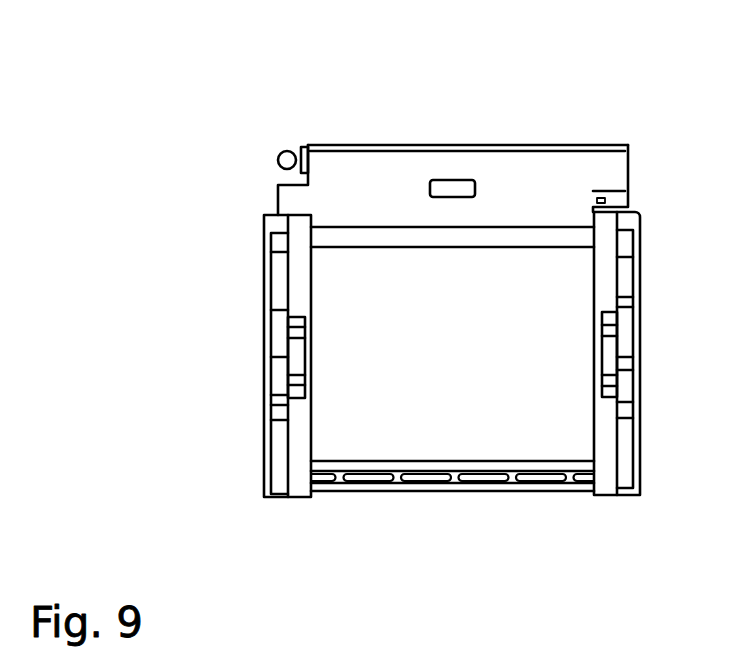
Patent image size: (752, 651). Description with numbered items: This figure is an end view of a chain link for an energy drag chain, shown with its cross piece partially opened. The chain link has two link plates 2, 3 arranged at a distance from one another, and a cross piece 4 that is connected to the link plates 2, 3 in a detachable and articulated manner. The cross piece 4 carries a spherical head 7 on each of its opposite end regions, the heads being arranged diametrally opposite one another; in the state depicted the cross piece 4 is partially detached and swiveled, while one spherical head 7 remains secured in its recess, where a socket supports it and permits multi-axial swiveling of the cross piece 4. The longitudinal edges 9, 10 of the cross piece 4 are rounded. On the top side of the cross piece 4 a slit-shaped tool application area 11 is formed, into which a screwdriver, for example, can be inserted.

The link plate 2 is at (263, 437).
The link plate 3 is at (640, 445).
The cross piece 4 is at (463, 118).
The spherical head 7 is at (280, 154).
The longitudinal edge 9 is at (473, 237).
The longitudinal edge 10 is at (575, 147).
The tool application area 11 is at (453, 188).